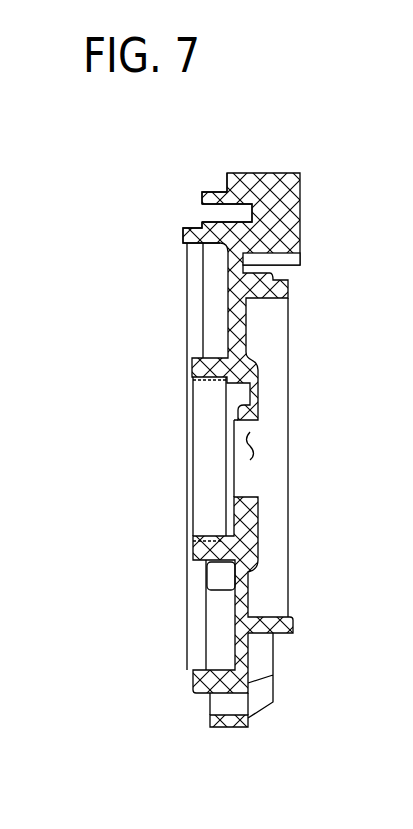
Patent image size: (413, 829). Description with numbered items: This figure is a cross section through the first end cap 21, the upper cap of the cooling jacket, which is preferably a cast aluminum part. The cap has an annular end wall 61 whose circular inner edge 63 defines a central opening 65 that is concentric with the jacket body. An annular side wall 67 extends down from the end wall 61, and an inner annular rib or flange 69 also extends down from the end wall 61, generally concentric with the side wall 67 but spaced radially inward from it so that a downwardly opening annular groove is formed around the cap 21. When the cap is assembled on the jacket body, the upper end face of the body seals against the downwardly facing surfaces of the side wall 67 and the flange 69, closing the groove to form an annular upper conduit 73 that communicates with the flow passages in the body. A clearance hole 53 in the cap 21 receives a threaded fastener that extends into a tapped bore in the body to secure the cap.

The first end cap 21 is at (175, 345).
The clearance hole 53 is at (238, 727).
The annular end wall 61 is at (244, 323).
The circular inner edge 63 is at (250, 492).
The central opening 65 is at (251, 446).
The annular side wall 67 is at (208, 193).
The inner annular flange 69 is at (205, 228).
The annular upper conduit 73 is at (210, 211).